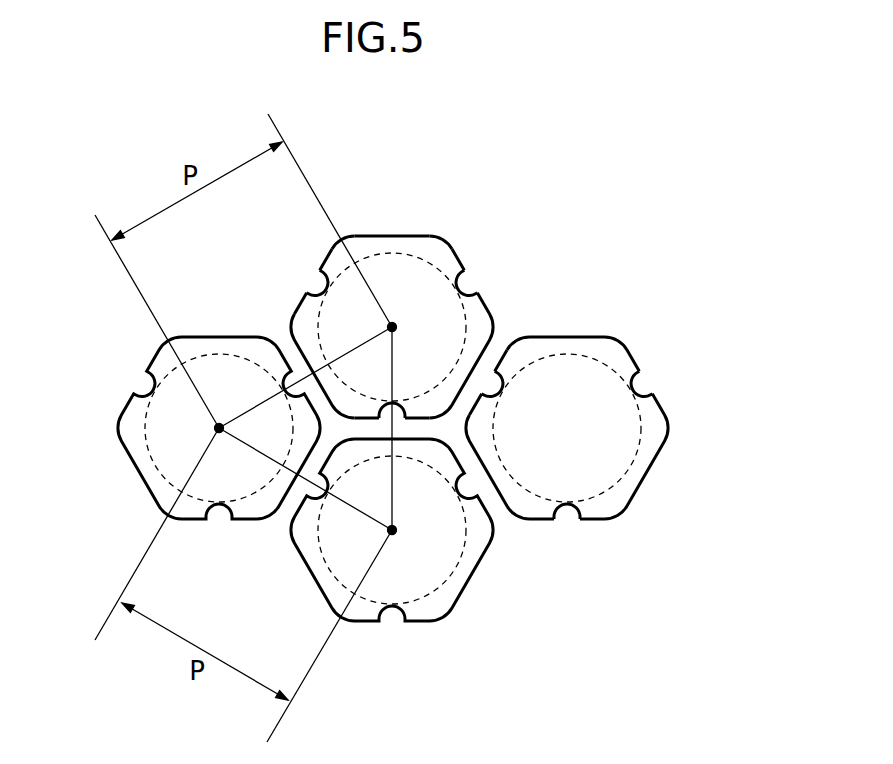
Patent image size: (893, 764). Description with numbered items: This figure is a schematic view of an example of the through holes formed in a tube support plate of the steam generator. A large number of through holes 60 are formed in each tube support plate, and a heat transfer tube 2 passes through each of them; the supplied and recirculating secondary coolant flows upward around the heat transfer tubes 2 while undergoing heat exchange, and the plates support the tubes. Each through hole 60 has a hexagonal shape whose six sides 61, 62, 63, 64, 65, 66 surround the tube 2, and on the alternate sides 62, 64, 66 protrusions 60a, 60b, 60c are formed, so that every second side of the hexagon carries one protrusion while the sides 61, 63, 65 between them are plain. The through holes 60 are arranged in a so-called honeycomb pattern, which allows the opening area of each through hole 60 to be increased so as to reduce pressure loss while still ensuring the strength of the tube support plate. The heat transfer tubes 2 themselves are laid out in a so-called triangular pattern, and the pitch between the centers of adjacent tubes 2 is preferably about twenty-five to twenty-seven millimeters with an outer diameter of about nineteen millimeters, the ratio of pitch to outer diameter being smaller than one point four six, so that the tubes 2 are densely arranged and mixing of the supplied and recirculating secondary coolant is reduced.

The heat transfer tube 2 is at (478, 312).
The through hole 60 is at (385, 419).
The protrusion 60a is at (317, 283).
The protrusion 60b is at (395, 413).
The protrusion 60c is at (468, 283).
The side 61 is at (387, 232).
The side 62 is at (328, 250).
The side 63 is at (268, 285).
The side 64 is at (395, 475).
The side 65 is at (470, 375).
The side 66 is at (457, 253).